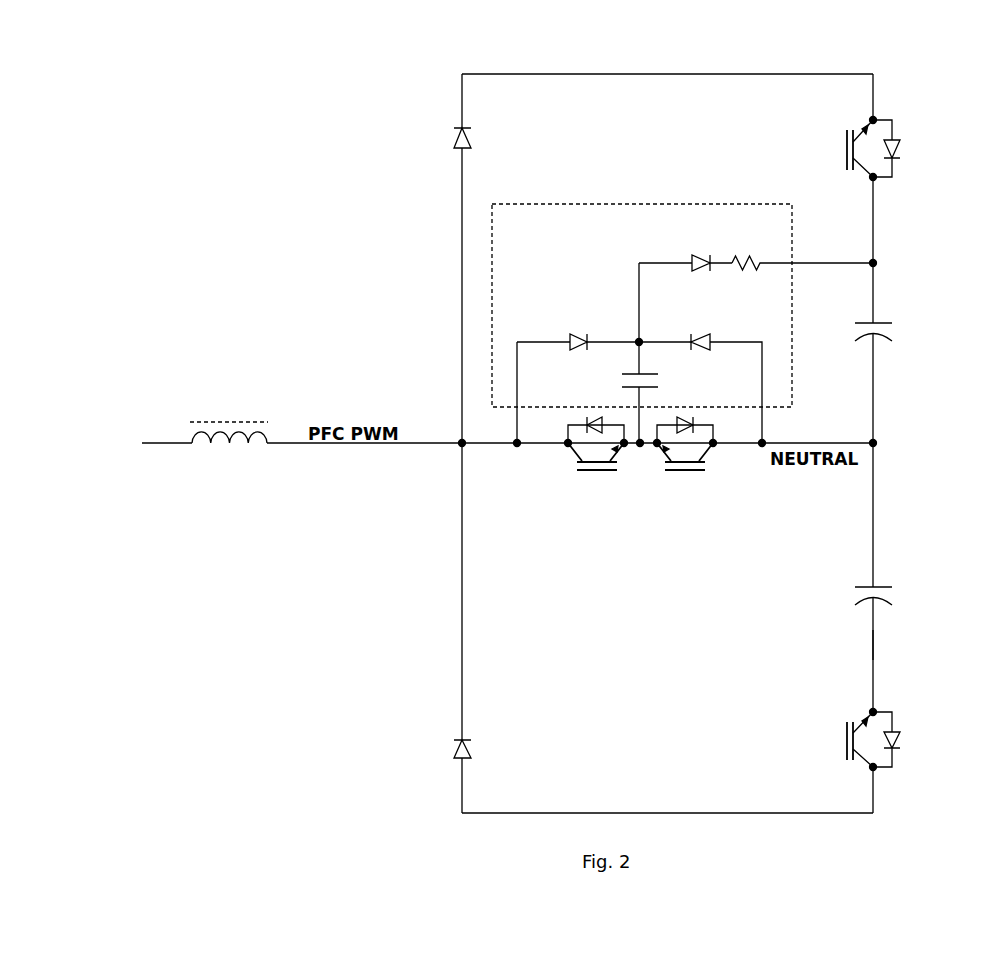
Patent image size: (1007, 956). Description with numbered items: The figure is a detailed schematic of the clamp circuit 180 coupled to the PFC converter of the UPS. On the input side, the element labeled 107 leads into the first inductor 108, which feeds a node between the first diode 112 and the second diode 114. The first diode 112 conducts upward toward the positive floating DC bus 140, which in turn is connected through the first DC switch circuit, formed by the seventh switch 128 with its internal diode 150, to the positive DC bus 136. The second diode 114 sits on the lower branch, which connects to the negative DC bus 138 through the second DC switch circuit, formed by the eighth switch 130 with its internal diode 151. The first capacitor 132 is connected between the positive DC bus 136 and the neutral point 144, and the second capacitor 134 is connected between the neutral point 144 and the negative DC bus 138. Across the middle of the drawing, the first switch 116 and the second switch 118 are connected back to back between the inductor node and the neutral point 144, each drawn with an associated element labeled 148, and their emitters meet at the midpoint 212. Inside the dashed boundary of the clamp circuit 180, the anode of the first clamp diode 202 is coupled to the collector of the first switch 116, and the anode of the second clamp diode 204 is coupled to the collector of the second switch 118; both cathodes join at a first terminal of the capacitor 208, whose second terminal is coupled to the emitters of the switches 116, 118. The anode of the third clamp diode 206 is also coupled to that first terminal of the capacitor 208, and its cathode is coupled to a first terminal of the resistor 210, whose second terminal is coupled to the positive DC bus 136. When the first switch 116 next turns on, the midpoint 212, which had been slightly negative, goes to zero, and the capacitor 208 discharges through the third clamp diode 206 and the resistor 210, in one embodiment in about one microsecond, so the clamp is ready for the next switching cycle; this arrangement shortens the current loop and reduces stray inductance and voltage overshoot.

The AC input (V IN) 107 is at (162, 447).
The first inductor 108 is at (262, 447).
The first diode 112 is at (456, 138).
The second diode 114 is at (462, 538).
The first switch 116 is at (580, 456).
The second switch 118 is at (702, 456).
The seventh switch 128 is at (842, 146).
The eighth switch 130 is at (840, 740).
The first capacitor 132 is at (880, 323).
The second capacitor 134 is at (870, 585).
The positive DC bus 136 is at (875, 260).
The negative DC bus 138 is at (872, 645).
The positive floating DC bus 140 is at (695, 75).
The neutral point 144 is at (878, 441).
The anti-parallel diodes of S3/S4 148 is at (602, 420).
The internal diode 150 is at (897, 140).
The internal diode 151 is at (897, 730).
The clamp circuit 180 is at (650, 215).
The first clamp diode (CL_D1) 202 is at (577, 348).
The second clamp diode (CL_D2) 204 is at (720, 337).
The third clamp diode (CL_D3) 206 is at (698, 272).
The capacitor (CL_C1) 208 is at (623, 373).
The resistor (CL_R1) 210 is at (755, 270).
The midpoint 212 is at (640, 448).